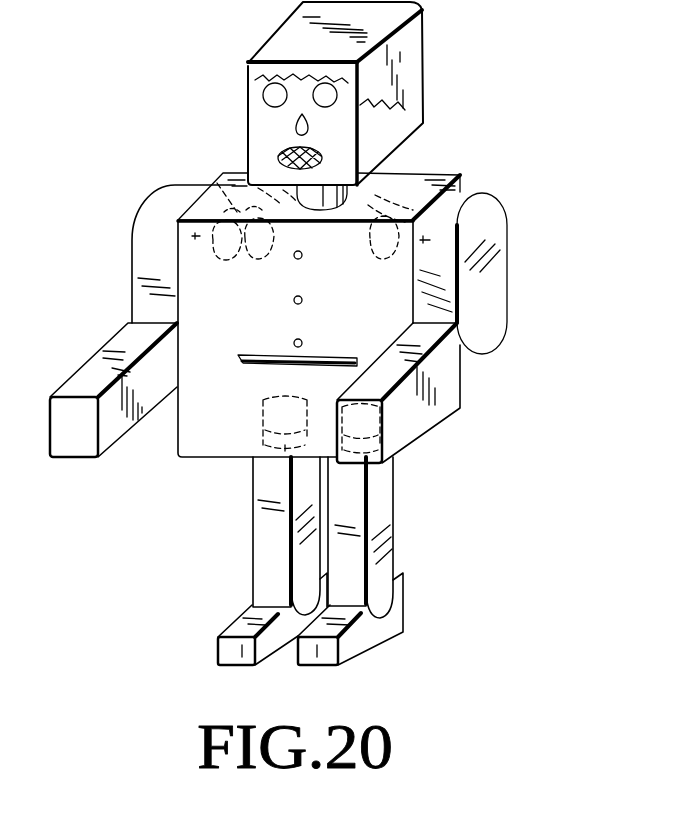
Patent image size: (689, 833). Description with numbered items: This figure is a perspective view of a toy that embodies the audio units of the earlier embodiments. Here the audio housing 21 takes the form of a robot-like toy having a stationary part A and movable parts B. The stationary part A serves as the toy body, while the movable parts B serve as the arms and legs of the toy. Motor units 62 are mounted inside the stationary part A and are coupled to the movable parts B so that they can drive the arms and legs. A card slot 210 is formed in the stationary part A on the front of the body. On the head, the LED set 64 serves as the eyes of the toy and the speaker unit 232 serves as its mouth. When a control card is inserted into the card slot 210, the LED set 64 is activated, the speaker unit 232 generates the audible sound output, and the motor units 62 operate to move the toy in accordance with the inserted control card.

The stationary part A is at (410, 185).
The audio housing 21 is at (510, 195).
The motor units 62 is at (266, 186).
The LED set 64 is at (273, 92).
The speaker unit 232 is at (327, 152).
The card slot 210 is at (258, 365).
The movable parts B is at (140, 258).